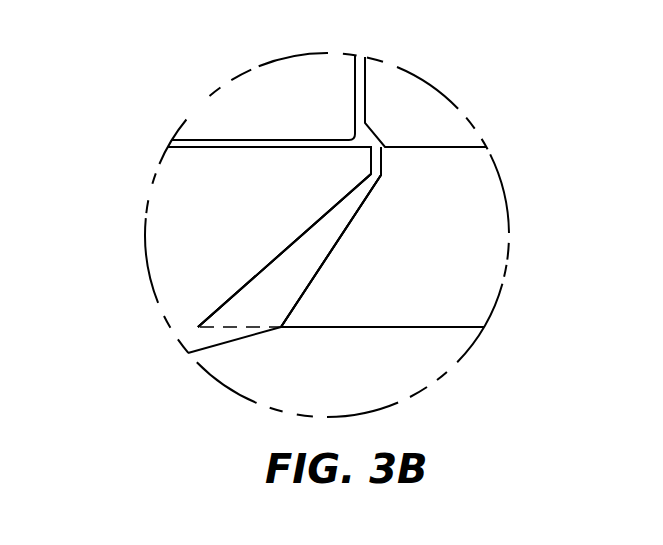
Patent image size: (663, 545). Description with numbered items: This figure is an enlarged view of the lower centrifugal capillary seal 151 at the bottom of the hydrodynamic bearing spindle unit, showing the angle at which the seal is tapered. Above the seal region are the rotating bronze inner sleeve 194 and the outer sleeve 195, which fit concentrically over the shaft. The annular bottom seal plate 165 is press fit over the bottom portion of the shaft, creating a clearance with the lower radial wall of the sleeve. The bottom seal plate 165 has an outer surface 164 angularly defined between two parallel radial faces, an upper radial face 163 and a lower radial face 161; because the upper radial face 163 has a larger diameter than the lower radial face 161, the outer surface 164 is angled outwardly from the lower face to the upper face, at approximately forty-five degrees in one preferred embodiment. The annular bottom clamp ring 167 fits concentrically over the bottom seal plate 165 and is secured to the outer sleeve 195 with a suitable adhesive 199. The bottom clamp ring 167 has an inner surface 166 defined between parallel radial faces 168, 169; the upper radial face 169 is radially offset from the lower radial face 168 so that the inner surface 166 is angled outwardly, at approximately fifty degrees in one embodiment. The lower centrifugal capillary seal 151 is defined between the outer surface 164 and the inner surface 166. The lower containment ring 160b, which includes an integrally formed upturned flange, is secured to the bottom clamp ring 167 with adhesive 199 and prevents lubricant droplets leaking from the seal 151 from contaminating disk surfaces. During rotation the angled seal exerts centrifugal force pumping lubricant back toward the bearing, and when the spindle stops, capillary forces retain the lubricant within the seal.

The inner sleeve 194 is at (320, 115).
The outer sleeve 195 is at (433, 127).
The upper radial face 163 is at (311, 146).
The bottom seal plate 165 is at (220, 218).
The outer surface 164 is at (307, 231).
The inner surface 166 is at (346, 232).
The bottom clamp ring 167 is at (437, 254).
The lower centrifugal capillary seal 151 is at (307, 249).
The upper radial face 169 is at (447, 147).
The lower radial face 168 is at (403, 327).
The lower containment ring 160b is at (413, 368).
The adhesive 199 is at (508, 228).
The lower radial face 161 is at (183, 327).